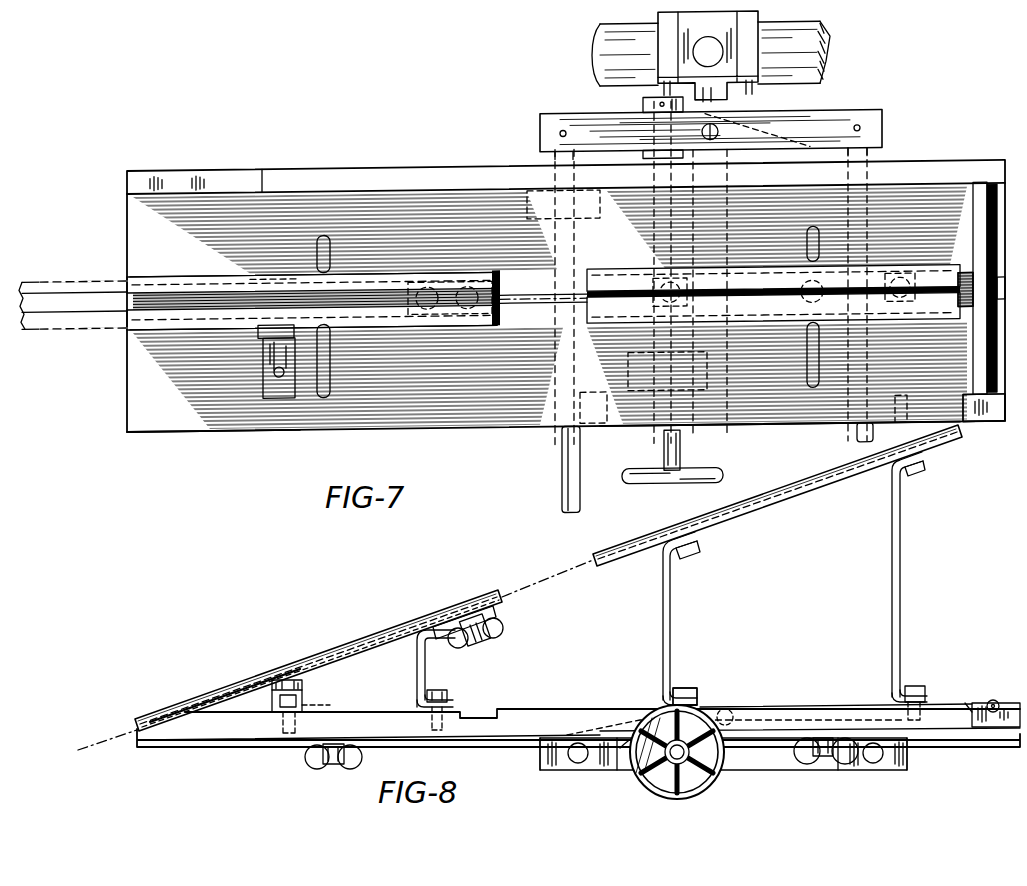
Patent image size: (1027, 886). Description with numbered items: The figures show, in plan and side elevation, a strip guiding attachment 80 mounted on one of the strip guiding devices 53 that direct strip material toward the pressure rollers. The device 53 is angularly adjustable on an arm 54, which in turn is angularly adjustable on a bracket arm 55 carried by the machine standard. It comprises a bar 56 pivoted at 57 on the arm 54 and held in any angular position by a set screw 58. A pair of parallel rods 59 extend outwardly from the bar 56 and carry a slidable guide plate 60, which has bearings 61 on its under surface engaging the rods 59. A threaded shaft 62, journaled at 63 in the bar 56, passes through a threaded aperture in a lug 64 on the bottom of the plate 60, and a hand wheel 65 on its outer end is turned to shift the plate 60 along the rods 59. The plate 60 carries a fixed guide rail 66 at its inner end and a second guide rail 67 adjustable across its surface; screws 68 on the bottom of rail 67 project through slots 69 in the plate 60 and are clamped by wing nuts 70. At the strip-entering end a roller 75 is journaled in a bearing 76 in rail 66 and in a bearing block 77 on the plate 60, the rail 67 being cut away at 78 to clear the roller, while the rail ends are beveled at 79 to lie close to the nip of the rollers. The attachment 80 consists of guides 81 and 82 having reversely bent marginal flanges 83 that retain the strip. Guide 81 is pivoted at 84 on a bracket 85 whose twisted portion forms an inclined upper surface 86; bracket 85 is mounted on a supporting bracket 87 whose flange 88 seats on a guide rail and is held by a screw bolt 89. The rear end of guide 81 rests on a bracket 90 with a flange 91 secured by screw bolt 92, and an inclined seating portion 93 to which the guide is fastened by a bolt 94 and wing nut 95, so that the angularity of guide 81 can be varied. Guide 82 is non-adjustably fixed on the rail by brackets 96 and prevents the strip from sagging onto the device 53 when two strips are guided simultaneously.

In FIG. 7, the strip guiding device 53 is at (770, 425).
In FIG. 8, the strip guiding device 53 is at (955, 735).
In FIG. 7, the arm 54 is at (740, 96).
In FIG. 8, the arm 54 is at (718, 748).
In FIG. 7, the bracket arm 55 is at (800, 52).
In FIG. 7, the bar 56 is at (838, 119).
In FIG. 8, the bar 56 is at (850, 772).
In FIG. 7, the pivot 57 is at (730, 138).
In FIG. 8, the pivot 57 is at (732, 738).
In FIG. 7, the set screw 58 is at (718, 142).
In FIG. 8, the set screw 58 is at (725, 709).
In FIG. 7, the parallel rods 59 is at (562, 452).
In FIG. 8, the parallel rods 59 is at (578, 764).
In FIG. 7, the guide plate 60 is at (195, 432).
In FIG. 8, the guide plate 60 is at (938, 735).
In FIG. 7, the bearings 61 is at (545, 196).
In FIG. 8, the bearings 61 is at (548, 771).
In FIG. 7, the threaded shaft 62 is at (682, 440).
In FIG. 8, the threaded shaft 62 is at (720, 778).
In FIG. 7, the journal 63 is at (655, 140).
In FIG. 7, the lug 64 is at (632, 392).
In FIG. 8, the lug 64 is at (650, 775).
In FIG. 7, the hand wheel 65 is at (650, 490).
In FIG. 8, the hand wheel 65 is at (703, 787).
In FIG. 7, the fixed guide rail 66 is at (412, 180).
In FIG. 7, the second guide rail 67 is at (540, 309).
In FIG. 8, the second guide rail 67 is at (555, 709).
In FIG. 7, the screws 68 is at (800, 292).
In FIG. 8, the screws 68 is at (334, 766).
In FIG. 7, the slots 69 is at (320, 400).
In FIG. 7, the wing nuts 70 is at (825, 292).
In FIG. 8, the wing nuts 70 is at (363, 757).
In FIG. 7, the roller 75 is at (978, 200).
In FIG. 7, the bearing 76 is at (992, 200).
In FIG. 7, the bearing block 77 is at (998, 422).
In FIG. 8, the bearing block 77 is at (995, 700).
In FIG. 8, the cut away 78 is at (985, 735).
In FIG. 8, the beveled ends 79 is at (208, 741).
In FIG. 7, the attachment 80 is at (450, 285).
In FIG. 8, the attachment 80 is at (225, 703).
In FIG. 7, the guide 81 is at (372, 278).
In FIG. 8, the guide 81 is at (330, 645).
In FIG. 7, the guide 82 is at (932, 270).
In FIG. 8, the guide 82 is at (732, 511).
In FIG. 7, the marginal flanges 83 is at (165, 277).
In FIG. 7, the pivot 84 is at (250, 281).
In FIG. 8, the pivot 84 is at (290, 680).
In FIG. 8, the bracket 85 is at (303, 684).
In FIG. 7, the inclined upper surface 86 is at (275, 342).
In FIG. 8, the inclined upper surface 86 is at (276, 692).
In FIG. 7, the supporting bracket 87 is at (268, 368).
In FIG. 8, the supporting bracket 87 is at (300, 700).
In FIG. 8, the flange 88 is at (330, 705).
In FIG. 8, the screw bolt 89 is at (280, 730).
In FIG. 8, the bracket 90 is at (425, 662).
In FIG. 8, the flange 91 is at (447, 702).
In FIG. 8, the screw bolt 92 is at (448, 694).
In FIG. 8, the inclined seating portion 93 is at (450, 625).
In FIG. 8, the bolt 94 is at (482, 640).
In FIG. 8, the wing nut 95 is at (500, 622).
In FIG. 8, the brackets 96 is at (672, 610).